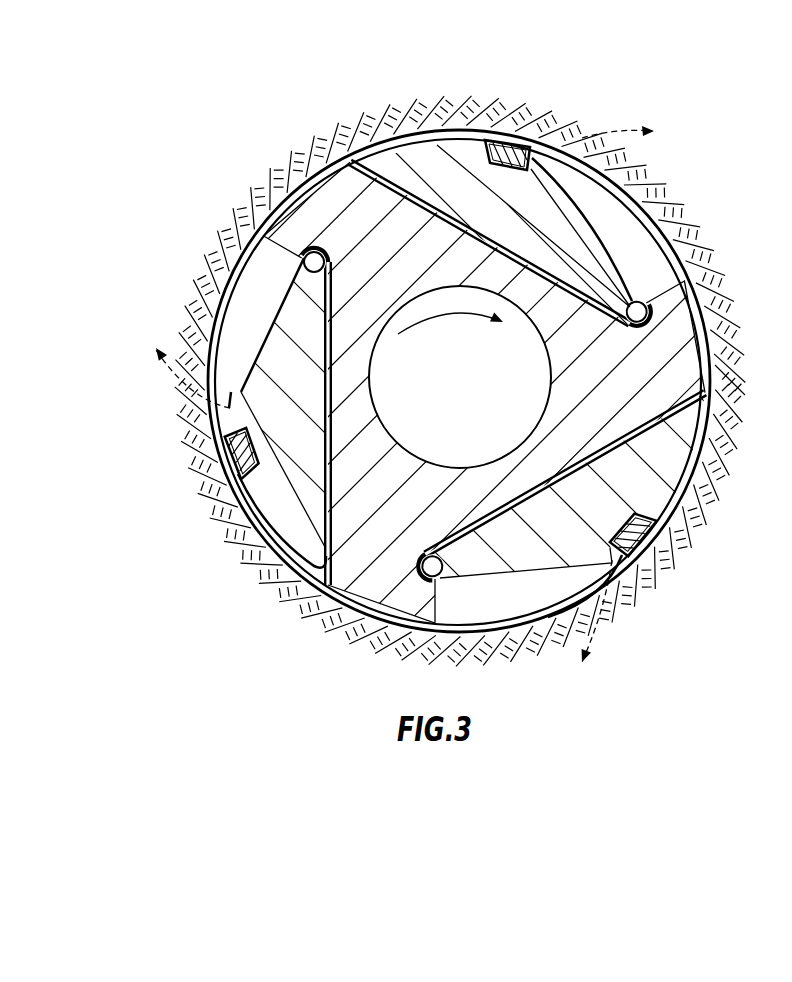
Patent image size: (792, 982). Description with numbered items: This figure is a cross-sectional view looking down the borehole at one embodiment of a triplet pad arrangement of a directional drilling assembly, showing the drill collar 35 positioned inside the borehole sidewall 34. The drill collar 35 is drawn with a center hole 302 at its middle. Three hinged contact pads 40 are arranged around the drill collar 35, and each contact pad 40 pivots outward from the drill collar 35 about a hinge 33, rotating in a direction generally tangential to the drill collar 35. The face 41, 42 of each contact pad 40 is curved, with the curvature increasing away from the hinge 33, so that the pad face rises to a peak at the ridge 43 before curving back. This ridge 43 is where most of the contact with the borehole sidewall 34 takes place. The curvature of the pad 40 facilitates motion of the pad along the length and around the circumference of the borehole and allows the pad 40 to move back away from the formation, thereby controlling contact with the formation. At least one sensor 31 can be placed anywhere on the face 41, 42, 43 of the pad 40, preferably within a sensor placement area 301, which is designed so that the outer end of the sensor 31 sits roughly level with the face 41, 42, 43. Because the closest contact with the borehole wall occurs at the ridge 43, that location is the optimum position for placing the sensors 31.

The sensor 31 is at (522, 142).
The hinge 33 is at (313, 262).
The borehole sidewall 34 is at (648, 222).
The drill collar 35 is at (326, 175).
The contact pad 40 is at (542, 205).
The face of contact pad 41 is at (274, 327).
The face of contact pad 42 is at (246, 508).
The ridge 43 is at (545, 158).
The sensor placement area 301 is at (487, 140).
The center hole 302 is at (526, 374).